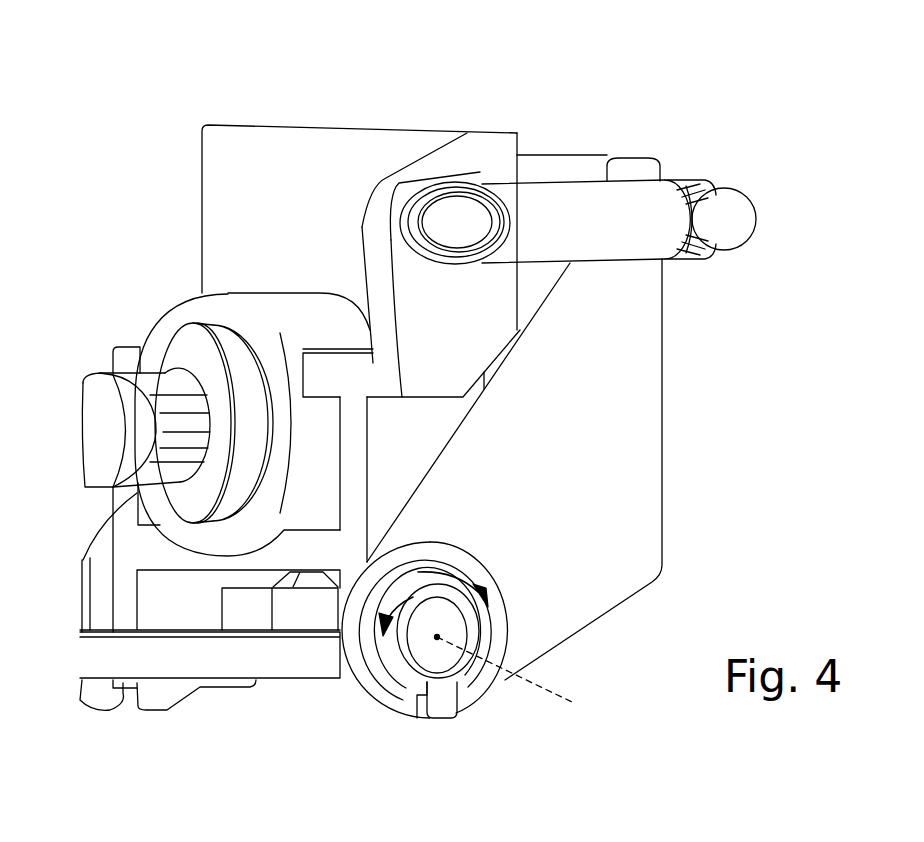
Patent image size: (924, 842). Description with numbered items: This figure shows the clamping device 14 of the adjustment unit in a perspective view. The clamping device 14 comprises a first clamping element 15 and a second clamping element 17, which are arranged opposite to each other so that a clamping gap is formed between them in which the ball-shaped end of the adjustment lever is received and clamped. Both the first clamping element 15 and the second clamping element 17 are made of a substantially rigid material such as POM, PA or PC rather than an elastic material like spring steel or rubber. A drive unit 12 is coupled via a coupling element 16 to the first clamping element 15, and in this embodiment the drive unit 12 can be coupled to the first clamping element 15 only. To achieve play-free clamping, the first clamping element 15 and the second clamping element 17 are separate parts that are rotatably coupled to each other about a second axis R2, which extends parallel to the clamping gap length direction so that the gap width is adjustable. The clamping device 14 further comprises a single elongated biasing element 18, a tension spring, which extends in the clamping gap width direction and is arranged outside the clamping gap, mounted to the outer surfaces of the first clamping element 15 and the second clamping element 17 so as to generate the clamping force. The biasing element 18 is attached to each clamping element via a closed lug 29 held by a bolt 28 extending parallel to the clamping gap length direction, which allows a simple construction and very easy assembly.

The drive unit 12 is at (102, 417).
The clamping device 14 is at (106, 118).
The first clamping element 15 is at (290, 150).
The coupling element 16 is at (177, 452).
The second clamping element 17 is at (628, 445).
The biasing element 18 is at (630, 197).
The bolt 28 is at (443, 207).
The closed lug 29 is at (462, 187).
The second axis R2 is at (547, 687).